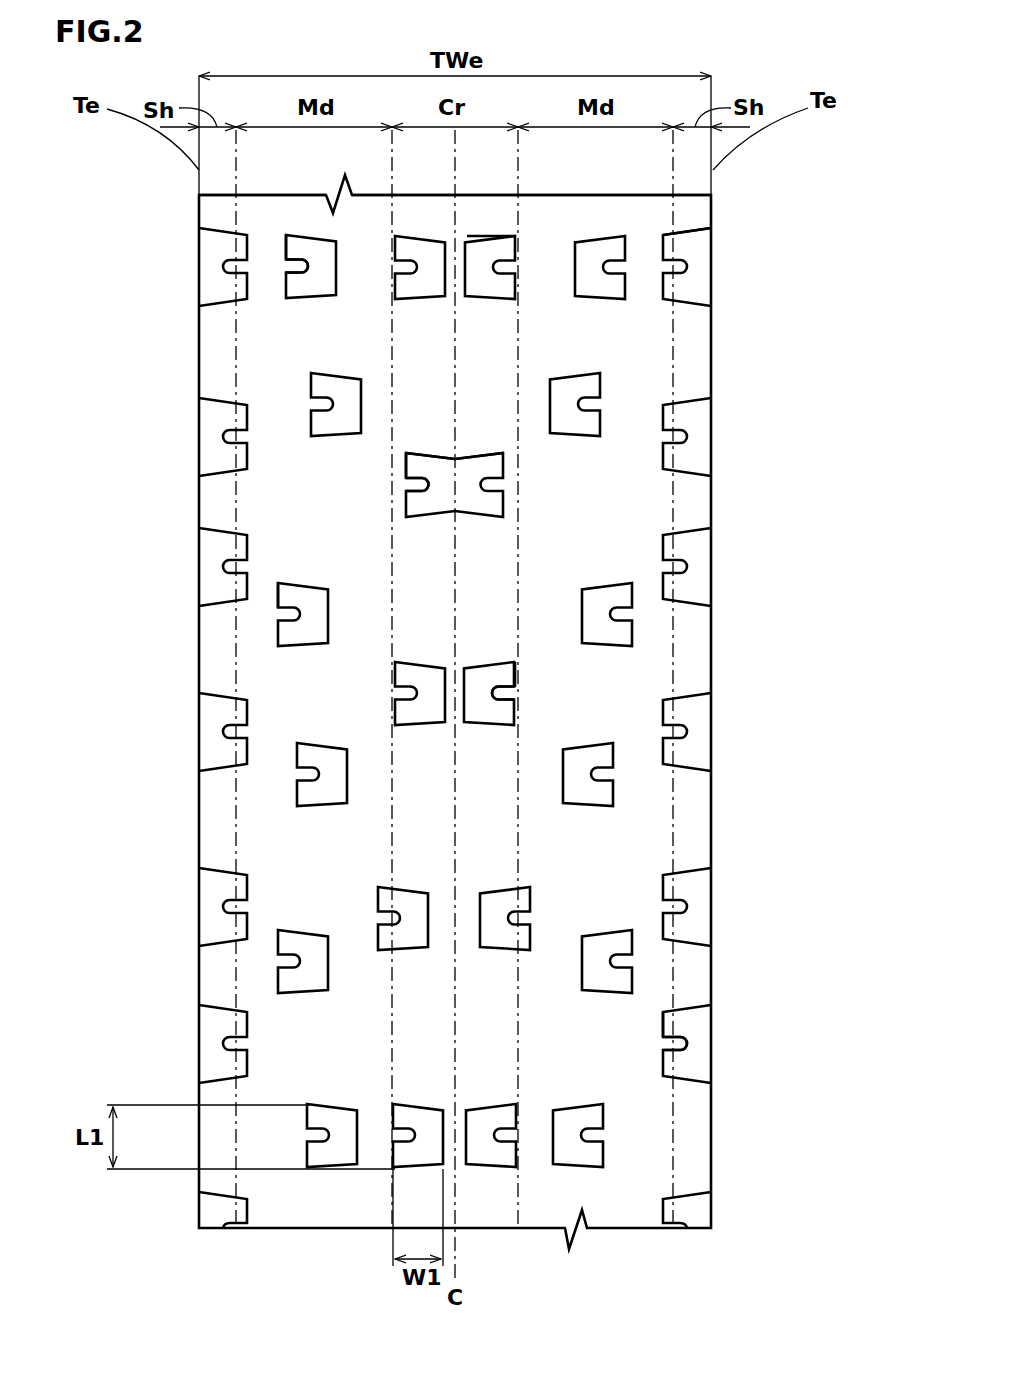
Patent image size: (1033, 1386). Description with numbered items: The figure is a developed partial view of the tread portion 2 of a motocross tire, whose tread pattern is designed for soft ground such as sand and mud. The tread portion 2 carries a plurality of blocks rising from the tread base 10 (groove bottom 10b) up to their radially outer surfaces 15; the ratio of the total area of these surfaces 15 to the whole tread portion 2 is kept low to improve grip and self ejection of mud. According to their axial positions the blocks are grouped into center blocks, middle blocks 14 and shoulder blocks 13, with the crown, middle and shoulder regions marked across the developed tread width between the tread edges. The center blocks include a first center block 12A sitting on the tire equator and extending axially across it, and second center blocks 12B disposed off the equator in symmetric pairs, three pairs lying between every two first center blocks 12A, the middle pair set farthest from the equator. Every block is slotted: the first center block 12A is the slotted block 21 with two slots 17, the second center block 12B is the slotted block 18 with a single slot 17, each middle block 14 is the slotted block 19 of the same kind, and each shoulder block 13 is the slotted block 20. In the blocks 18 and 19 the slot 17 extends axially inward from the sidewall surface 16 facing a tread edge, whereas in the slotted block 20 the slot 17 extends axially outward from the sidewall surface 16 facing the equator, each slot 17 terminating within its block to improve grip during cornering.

The tread portion 2 is at (762, 177).
The tread portion 10 is at (455, 732).
The tread base 10b is at (322, 1203).
The first center block 12A is at (633, 497).
The slotted block 21 is at (508, 505).
The second center block 12B is at (457, 701).
The slotted block 18 is at (520, 292).
The shoulder block 13 is at (459, 728).
The slotted block 20 is at (195, 732).
The middle block 14 is at (458, 722).
The slotted block 19 is at (306, 301).
The radially outer surface 15 is at (497, 246).
The sidewall surface 16 is at (285, 244).
The slot 17 is at (283, 268).